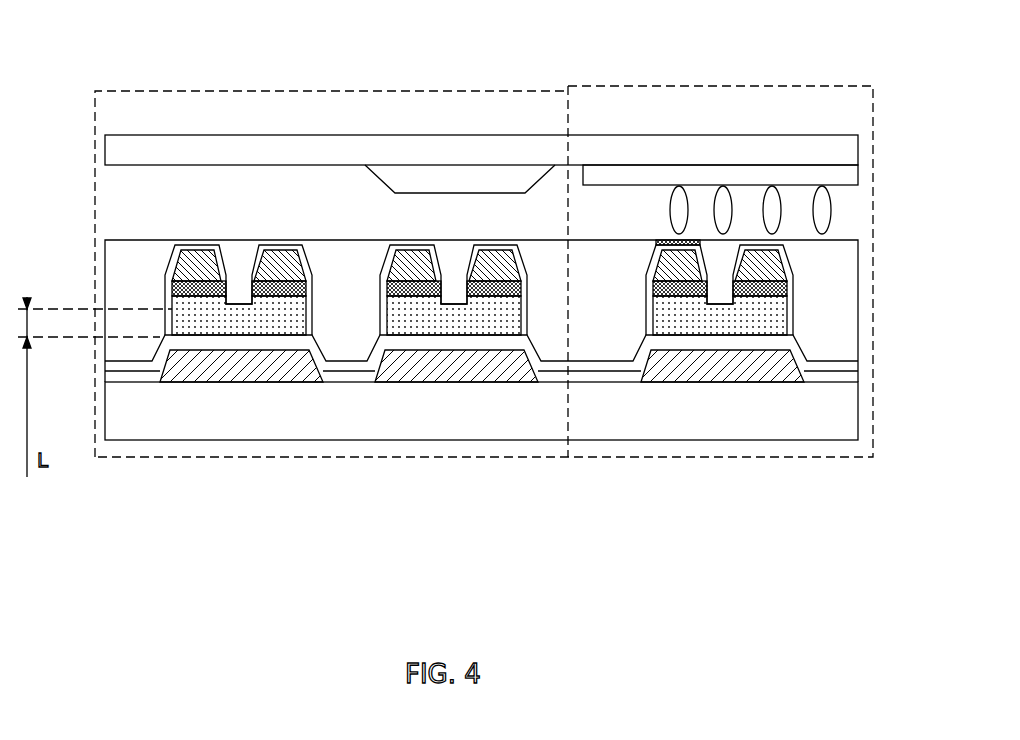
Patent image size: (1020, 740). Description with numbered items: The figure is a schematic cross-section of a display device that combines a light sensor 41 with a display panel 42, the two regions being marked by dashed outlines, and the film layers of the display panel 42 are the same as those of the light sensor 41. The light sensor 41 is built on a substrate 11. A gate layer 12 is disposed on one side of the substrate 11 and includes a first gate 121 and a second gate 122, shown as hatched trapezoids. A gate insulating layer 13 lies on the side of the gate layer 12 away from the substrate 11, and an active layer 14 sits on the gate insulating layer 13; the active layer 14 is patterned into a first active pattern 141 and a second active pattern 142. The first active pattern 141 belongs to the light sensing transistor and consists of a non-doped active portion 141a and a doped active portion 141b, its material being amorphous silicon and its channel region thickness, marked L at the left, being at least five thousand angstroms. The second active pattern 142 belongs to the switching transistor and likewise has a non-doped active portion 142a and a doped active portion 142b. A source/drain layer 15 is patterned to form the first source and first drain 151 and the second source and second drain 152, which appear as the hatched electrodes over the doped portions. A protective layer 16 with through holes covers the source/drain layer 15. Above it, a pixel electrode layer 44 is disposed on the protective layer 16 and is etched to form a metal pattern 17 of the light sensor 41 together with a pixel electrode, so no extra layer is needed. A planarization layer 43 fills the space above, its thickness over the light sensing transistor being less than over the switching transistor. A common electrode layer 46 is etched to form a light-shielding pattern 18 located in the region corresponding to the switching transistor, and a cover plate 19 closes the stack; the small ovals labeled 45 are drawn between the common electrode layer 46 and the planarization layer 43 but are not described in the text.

The substrate 11 is at (840, 408).
The gate layer 12 is at (160, 597).
The first gate 121 is at (173, 377).
The second gate 122 is at (522, 362).
The gate insulating layer 13 is at (162, 350).
The active layer 14 is at (513, 588).
The first active pattern 141 is at (278, 597).
The non-doped active portion 141a is at (187, 322).
The doped active portion 141b is at (185, 290).
The second active pattern 142 is at (395, 597).
The non-doped active portion 142a is at (505, 322).
The doped active portion 142b is at (480, 295).
The source/drain layer 15 is at (627, 597).
The first source and first drain 151 is at (190, 270).
The second source and second drain 152 is at (410, 290).
The protective layer 16 is at (180, 251).
The metal pattern 17 is at (205, 240).
The light-shielding pattern 18 is at (520, 180).
The cover plate 19 is at (827, 150).
The light sensor 41 is at (95, 91).
The display panel 42 is at (568, 86).
The planarization layer 43 is at (838, 293).
The pixel electrode layer 44 is at (785, 241).
The spacers 45 is at (825, 212).
The common electrode layer 46 is at (835, 176).